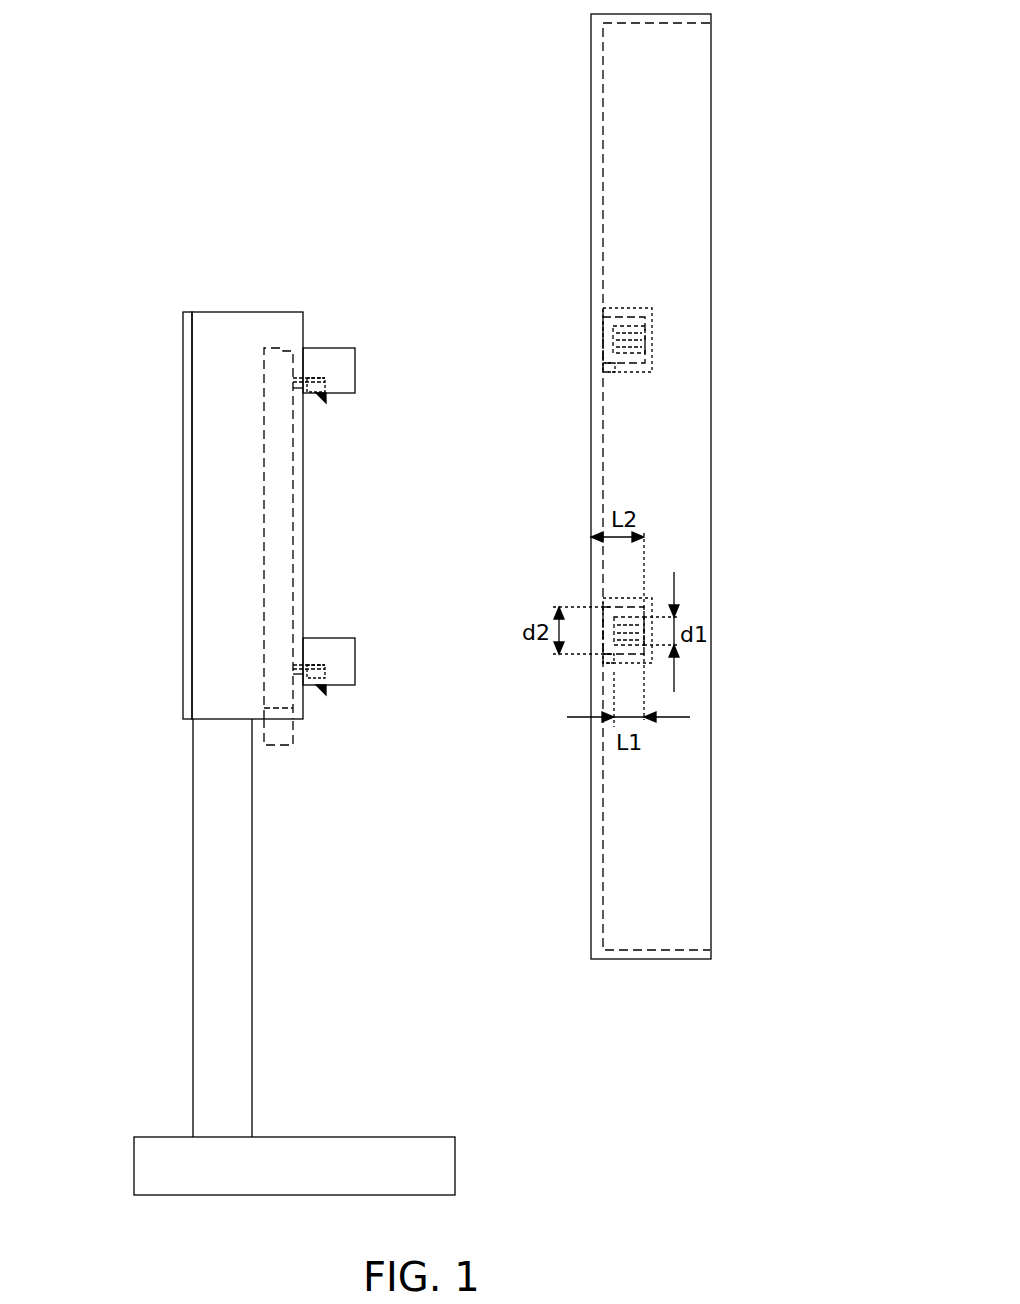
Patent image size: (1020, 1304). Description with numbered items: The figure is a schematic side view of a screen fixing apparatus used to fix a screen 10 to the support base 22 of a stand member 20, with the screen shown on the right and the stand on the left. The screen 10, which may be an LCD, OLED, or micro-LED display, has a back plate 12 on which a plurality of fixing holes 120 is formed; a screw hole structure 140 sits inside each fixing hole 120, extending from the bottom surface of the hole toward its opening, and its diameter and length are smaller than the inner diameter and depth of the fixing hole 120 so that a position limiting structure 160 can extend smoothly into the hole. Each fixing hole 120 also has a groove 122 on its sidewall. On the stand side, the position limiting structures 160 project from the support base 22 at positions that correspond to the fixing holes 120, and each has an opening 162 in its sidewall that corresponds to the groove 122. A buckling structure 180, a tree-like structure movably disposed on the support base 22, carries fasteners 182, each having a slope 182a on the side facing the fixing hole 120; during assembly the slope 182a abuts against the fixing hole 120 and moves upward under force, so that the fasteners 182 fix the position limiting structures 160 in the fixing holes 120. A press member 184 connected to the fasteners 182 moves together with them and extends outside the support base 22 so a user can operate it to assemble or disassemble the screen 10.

The screen 10 is at (710, 130).
The back plate 12 is at (597, 130).
The stand member 20 is at (205, 893).
The support base 22 is at (185, 410).
The fixing hole 120 is at (600, 350).
The groove 122 is at (608, 388).
The screw hole structure 140 is at (640, 330).
The position limiting structure 160 is at (335, 638).
The opening 162 is at (320, 672).
The buckling structure 180 is at (266, 347).
The fastener 182 is at (322, 400).
The slope 182a is at (325, 398).
The press member 184 is at (270, 738).